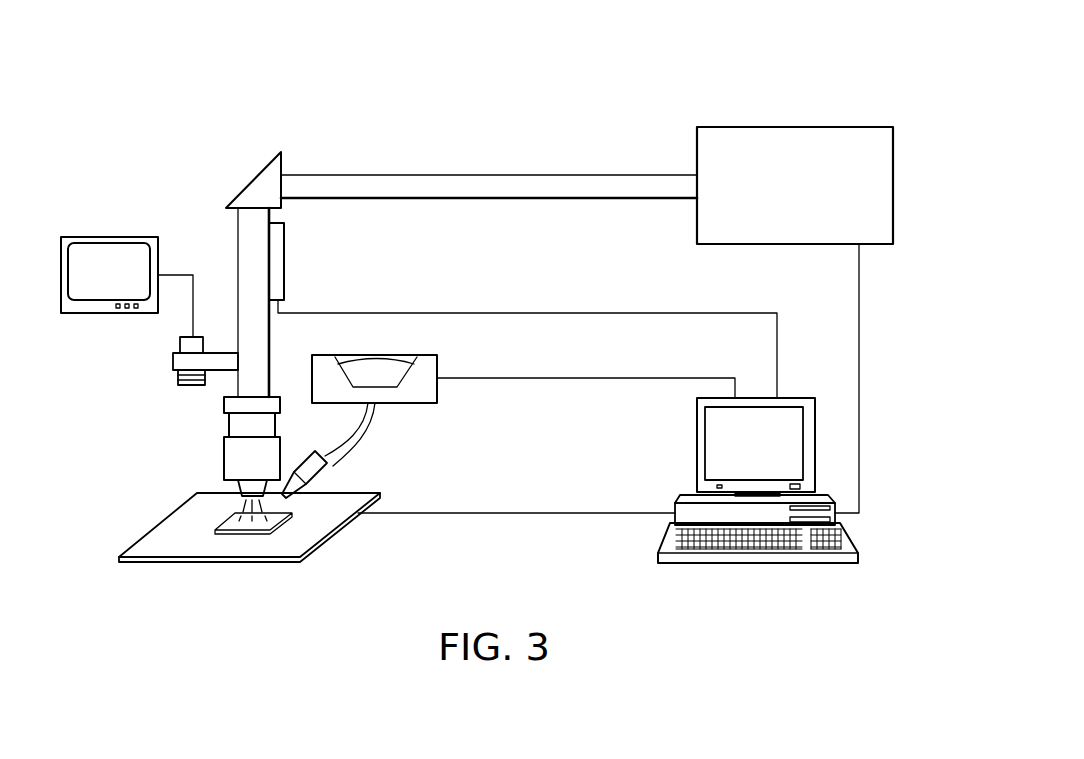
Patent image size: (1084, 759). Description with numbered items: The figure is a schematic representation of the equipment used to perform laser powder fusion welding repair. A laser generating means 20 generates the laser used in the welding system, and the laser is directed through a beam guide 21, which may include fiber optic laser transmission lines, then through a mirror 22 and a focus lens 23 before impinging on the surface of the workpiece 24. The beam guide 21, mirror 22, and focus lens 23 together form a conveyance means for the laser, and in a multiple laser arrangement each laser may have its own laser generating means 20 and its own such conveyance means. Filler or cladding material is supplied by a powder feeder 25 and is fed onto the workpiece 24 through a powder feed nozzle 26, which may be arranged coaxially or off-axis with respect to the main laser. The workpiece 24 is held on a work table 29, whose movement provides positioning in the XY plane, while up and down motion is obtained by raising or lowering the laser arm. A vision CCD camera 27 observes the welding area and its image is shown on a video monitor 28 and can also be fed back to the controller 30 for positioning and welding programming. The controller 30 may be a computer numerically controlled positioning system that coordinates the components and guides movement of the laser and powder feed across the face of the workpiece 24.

The laser generating means 20 is at (796, 127).
The beam guide 21 is at (456, 175).
The mirror 22 is at (256, 178).
The focus lens 23 is at (222, 456).
The workpiece 24 is at (215, 527).
The powder feeder 25 is at (432, 403).
The powder feed nozzle 26 is at (332, 468).
The vision CCD camera 27 is at (177, 378).
The video monitor 28 is at (112, 236).
The work table 29 is at (250, 565).
The controller 30 is at (766, 565).